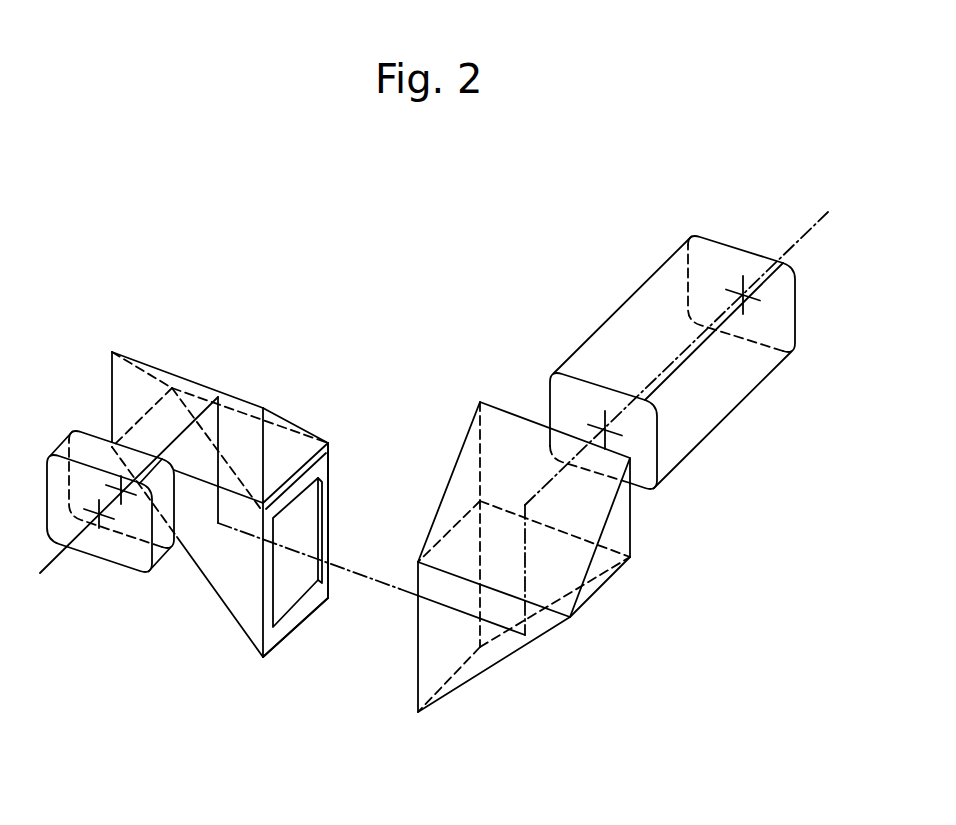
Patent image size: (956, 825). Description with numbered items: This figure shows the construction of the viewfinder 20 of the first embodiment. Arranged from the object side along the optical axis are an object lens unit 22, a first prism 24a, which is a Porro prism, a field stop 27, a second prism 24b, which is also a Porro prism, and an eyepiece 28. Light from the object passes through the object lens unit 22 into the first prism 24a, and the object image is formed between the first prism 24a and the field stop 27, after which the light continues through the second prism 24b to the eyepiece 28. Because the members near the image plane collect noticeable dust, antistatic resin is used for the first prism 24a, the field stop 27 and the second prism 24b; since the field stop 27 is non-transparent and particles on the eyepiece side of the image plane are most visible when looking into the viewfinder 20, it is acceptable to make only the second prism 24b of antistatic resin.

The viewfinder 20 is at (712, 177).
The object lens unit 22 is at (707, 438).
The first prism 24a is at (493, 668).
The second prism 24b is at (215, 592).
The field stop 27 is at (298, 627).
The eyepiece 28 is at (100, 560).